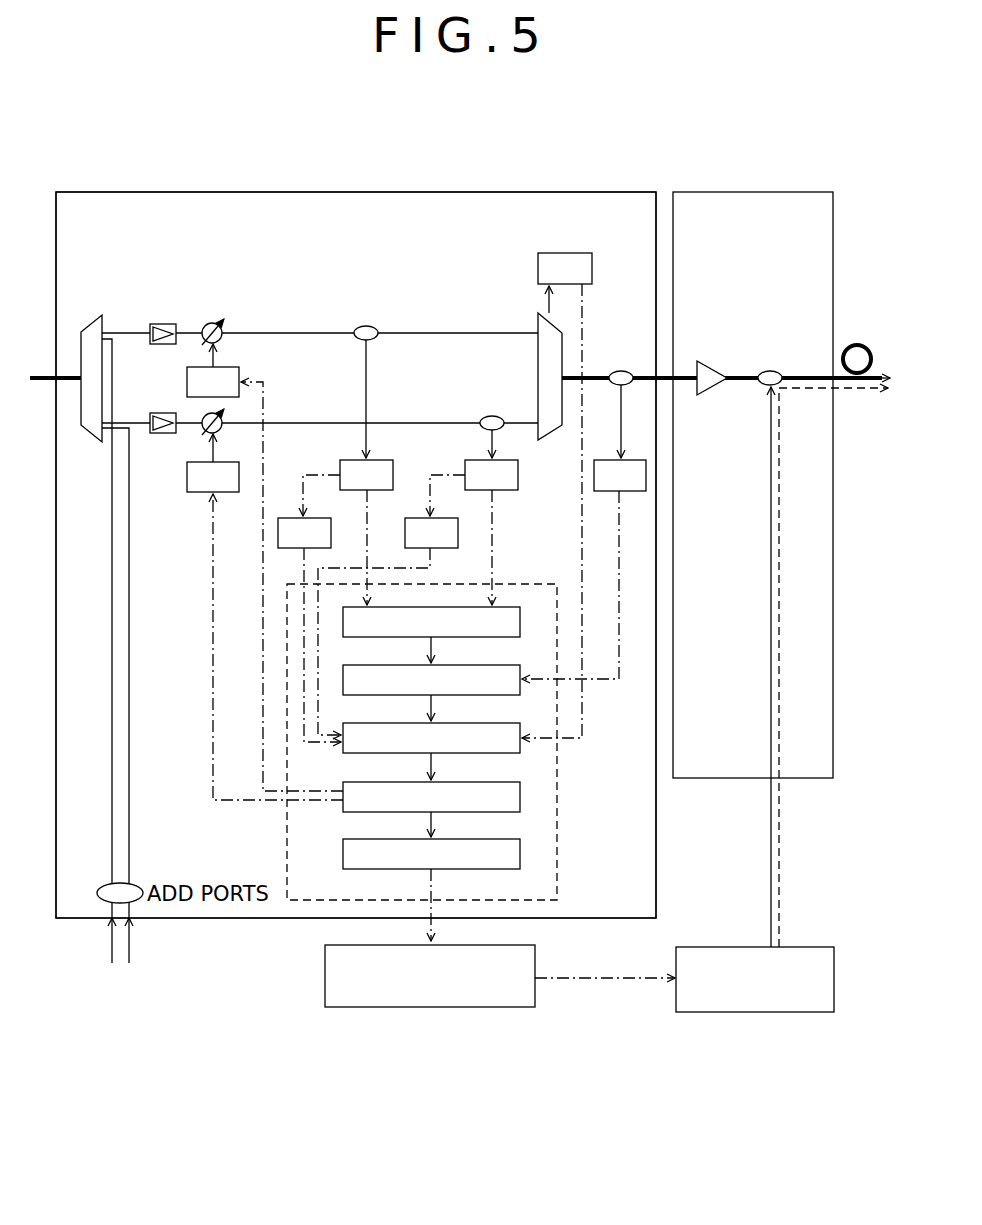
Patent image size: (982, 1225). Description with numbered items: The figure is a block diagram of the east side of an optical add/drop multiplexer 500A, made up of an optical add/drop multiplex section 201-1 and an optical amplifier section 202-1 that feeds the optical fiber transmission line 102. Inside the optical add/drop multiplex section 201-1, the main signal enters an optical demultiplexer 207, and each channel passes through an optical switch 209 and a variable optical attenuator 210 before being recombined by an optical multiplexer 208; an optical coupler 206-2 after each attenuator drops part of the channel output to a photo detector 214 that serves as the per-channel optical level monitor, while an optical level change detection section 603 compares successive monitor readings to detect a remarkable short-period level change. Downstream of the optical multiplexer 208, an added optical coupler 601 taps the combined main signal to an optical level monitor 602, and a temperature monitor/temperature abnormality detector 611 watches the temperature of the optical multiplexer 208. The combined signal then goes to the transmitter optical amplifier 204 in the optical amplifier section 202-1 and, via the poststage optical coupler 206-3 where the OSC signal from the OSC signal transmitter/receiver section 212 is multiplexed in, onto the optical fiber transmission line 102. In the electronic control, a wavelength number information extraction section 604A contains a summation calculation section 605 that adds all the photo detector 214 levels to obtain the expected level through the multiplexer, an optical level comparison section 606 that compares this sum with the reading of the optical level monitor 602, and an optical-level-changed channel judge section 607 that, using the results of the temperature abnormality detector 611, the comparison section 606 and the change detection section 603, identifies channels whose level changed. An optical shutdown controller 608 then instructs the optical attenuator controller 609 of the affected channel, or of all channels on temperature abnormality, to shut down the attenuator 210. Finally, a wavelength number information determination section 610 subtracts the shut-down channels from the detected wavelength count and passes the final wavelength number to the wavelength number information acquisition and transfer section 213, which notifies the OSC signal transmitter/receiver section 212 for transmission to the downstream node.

The optical add/drop multiplexer 500A is at (621, 119).
The optical add/drop multiplex section (east) 201-1 is at (240, 192).
The optical amplifier section (east) 202-1 is at (745, 192).
The optical fiber transmission line 102 is at (857, 345).
The transmitter optical amplifier 204 is at (708, 361).
The optical coupler 206-2 is at (492, 416).
The poststage optical coupler 206-3 is at (772, 371).
The optical demultiplexer 207 is at (82, 332).
The optical multiplexer 208 is at (558, 440).
The optical switch 209 is at (163, 324).
The variable optical attenuator 210 is at (216, 323).
The OSC signal transmitter/receiver section 212 is at (758, 1012).
The wavelength number information acquisition and transfer section 213 is at (418, 1007).
The photo detector 214 is at (393, 462).
The optical coupler 601 is at (622, 370).
The optical level monitor 602 is at (646, 475).
The optical level change detection section 603 is at (296, 512).
The wavelength number information extraction section 604A is at (285, 843).
The summation calculation section 605 is at (490, 637).
The optical level comparison section 606 is at (490, 695).
The optical-level-changed channel judge section 607 is at (490, 753).
The optical shutdown controller 608 is at (490, 812).
The optical attenuator controller 609 is at (239, 372).
The wavelength number information determination section 610 is at (490, 869).
The temperature monitor/temperature abnormality detector 611 is at (590, 252).